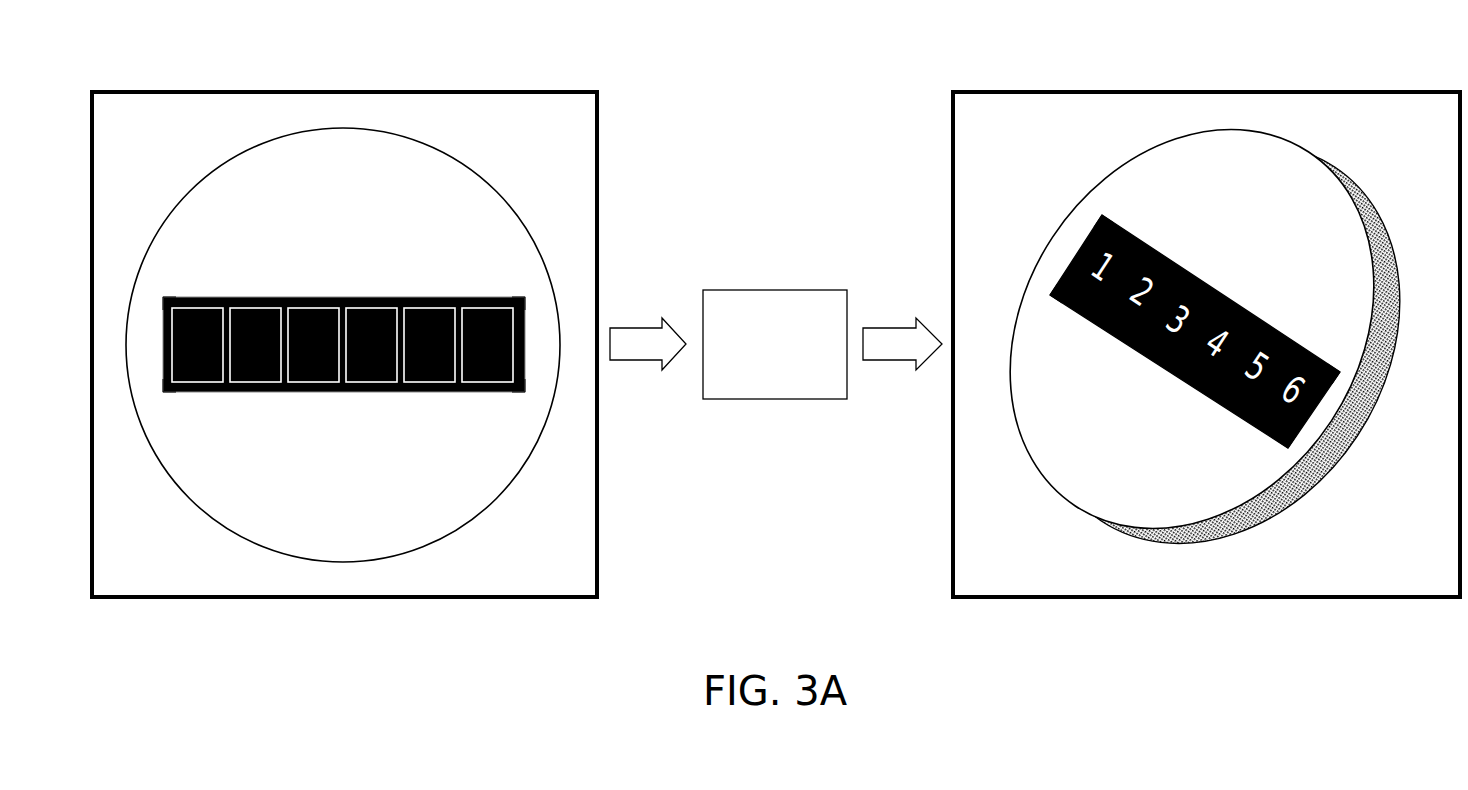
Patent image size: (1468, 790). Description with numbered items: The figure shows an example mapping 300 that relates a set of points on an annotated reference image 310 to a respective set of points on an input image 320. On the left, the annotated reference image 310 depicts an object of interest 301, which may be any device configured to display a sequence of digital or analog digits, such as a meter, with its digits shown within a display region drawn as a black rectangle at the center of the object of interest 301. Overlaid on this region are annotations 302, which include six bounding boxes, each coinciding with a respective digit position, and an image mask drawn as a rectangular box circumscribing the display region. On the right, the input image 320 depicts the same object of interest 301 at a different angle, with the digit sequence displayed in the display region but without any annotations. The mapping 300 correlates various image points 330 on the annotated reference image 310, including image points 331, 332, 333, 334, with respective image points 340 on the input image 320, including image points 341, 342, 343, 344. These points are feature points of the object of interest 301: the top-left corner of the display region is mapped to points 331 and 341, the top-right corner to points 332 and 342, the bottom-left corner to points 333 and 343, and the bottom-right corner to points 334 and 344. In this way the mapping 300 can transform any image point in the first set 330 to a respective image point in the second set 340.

The mapping 300 is at (775, 344).
The object of interest 301 is at (473, 167).
The annotations 302 is at (371, 296).
The annotated reference image 310 is at (165, 90).
The input image 320 is at (1027, 90).
The image points on the annotated reference image 330 is at (648, 296).
The image point 331 is at (165, 290).
The image point 332 is at (525, 290).
The image point 333 is at (165, 400).
The image point 334 is at (523, 400).
The image points on the input image 340 is at (902, 296).
The image point 341 is at (1110, 212).
The image point 342 is at (1343, 360).
The image point 343 is at (1050, 302).
The image point 344 is at (1282, 450).